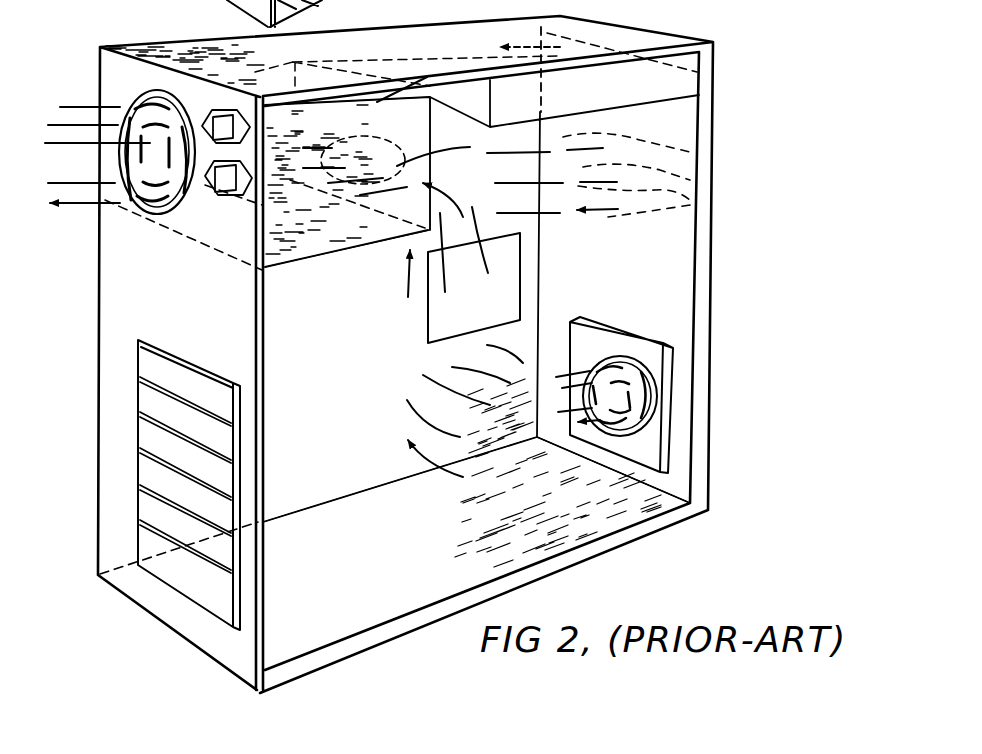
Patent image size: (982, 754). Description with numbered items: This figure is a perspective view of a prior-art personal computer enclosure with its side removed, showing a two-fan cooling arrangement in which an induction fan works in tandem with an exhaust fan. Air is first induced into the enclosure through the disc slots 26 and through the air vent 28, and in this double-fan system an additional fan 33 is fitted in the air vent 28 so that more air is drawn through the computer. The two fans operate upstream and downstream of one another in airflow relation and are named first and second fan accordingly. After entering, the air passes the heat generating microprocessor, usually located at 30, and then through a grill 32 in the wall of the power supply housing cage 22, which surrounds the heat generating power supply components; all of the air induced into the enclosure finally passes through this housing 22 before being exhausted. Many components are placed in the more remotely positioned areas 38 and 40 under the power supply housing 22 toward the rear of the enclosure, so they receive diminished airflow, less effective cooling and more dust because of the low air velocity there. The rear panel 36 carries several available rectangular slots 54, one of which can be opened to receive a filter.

The power supply housing cage 22 is at (133, 163).
The disc slots 26 is at (607, 50).
The air vent 28 is at (608, 340).
The microprocessor location 30 is at (463, 292).
The grill 32 is at (368, 168).
The additional fan 33 is at (612, 412).
The rear panel 36 is at (98, 336).
The remotely positioned area 38 is at (329, 476).
The remotely positioned area 40 is at (328, 306).
The rectangular slots 54 is at (160, 482).